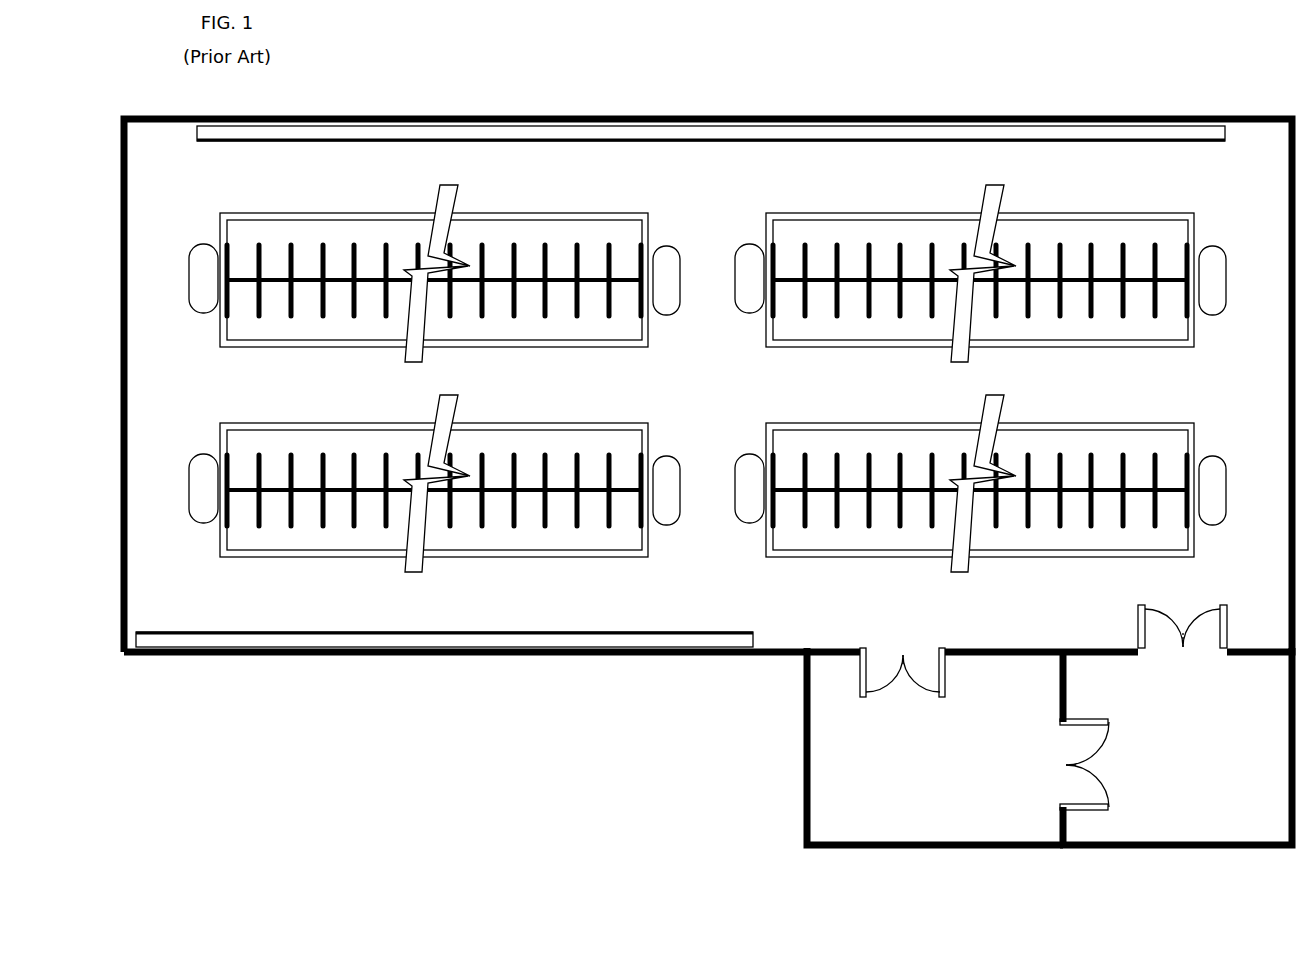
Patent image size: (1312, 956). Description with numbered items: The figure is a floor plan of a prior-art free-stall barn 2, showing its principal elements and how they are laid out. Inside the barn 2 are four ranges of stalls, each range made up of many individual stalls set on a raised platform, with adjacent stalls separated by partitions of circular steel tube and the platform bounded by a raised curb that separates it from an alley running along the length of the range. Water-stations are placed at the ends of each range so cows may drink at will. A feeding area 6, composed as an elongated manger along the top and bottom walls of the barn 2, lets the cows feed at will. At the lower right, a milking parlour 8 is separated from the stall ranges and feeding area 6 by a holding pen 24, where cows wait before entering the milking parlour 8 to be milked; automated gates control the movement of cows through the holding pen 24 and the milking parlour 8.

The free-stall barn 2 is at (596, 94).
The feeding area 6 is at (716, 160).
The milking parlour 8 is at (1214, 735).
The holding pen 24 is at (932, 765).